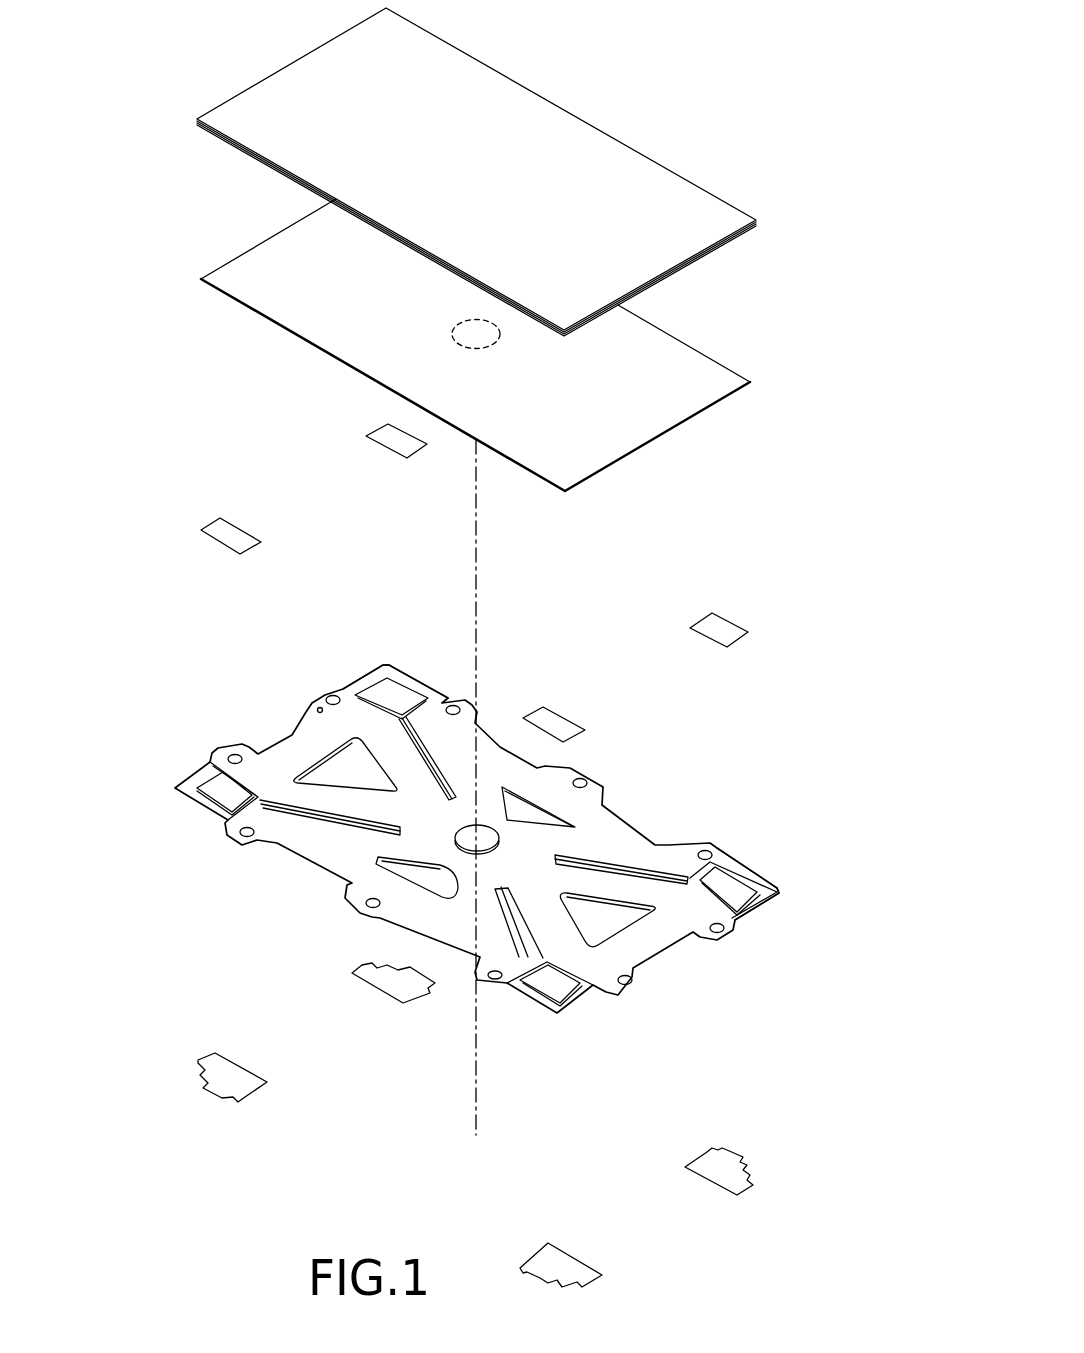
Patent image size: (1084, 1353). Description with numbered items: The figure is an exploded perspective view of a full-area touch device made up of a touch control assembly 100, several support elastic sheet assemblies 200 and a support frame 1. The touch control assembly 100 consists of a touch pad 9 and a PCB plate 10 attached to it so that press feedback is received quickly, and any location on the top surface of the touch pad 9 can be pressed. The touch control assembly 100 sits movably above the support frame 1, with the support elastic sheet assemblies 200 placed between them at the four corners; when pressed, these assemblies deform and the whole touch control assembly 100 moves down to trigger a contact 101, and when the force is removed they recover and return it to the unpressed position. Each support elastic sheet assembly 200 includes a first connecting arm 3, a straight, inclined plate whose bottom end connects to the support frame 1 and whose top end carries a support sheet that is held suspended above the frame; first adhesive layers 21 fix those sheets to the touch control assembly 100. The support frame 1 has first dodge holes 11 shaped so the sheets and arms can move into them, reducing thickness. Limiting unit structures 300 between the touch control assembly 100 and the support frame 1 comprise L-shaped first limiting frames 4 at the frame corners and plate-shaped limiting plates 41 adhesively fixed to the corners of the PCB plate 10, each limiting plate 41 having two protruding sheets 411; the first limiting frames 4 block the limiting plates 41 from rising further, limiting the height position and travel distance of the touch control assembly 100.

The support frame 1 is at (478, 819).
The first connecting arm 3 is at (618, 870).
The first limiting frame 4 is at (766, 885).
The touch pad 9 is at (678, 191).
The PCB plate 10 is at (683, 405).
The first dodge hole 11 is at (516, 925).
The first adhesive layer 21 is at (752, 623).
The limiting plate 41 is at (233, 1073).
The touch control assembly 100 is at (762, 223).
The contact 101 is at (452, 339).
The support elastic sheet assembly 200 is at (402, 698).
The limiting unit structure 300 is at (745, 1166).
The protruding sheet 411 is at (728, 1150).